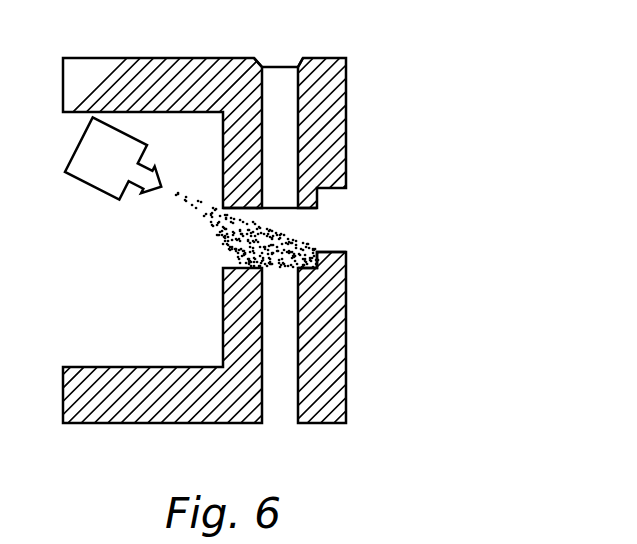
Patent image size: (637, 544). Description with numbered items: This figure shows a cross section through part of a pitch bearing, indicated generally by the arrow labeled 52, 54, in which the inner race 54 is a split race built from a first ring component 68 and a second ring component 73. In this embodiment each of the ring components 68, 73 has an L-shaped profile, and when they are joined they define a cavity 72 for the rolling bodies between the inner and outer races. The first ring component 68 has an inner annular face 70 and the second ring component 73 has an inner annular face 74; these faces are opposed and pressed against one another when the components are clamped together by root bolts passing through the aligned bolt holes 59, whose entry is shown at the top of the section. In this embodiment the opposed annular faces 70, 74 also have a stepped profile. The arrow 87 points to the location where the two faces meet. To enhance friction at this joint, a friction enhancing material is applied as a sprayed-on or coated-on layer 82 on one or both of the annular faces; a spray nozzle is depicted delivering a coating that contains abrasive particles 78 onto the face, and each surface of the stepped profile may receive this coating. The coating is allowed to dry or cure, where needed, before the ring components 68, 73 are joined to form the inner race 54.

The die assembly 52 is at (422, 72).
The inner race 54 is at (422, 72).
The bolt holes 59 is at (259, 77).
The first ring component 68 is at (346, 137).
The inner annular face 70 is at (283, 208).
The cavity 72 is at (145, 58).
The second ring component 73 is at (346, 345).
The inner annular face 74 is at (338, 251).
The abrasive particles 78 is at (188, 212).
The sprayed-on or coated-on layer 82 is at (245, 269).
The gap between die portions 87 is at (352, 212).